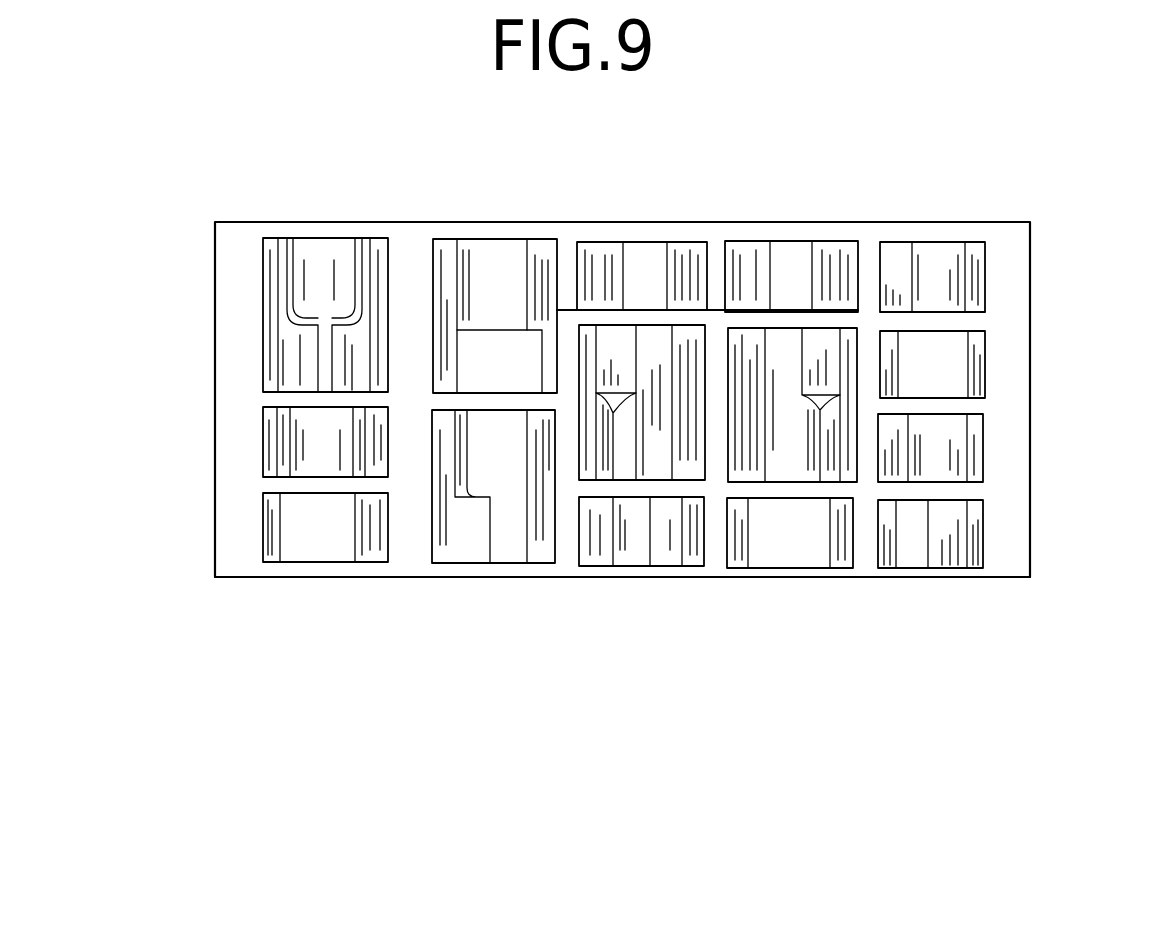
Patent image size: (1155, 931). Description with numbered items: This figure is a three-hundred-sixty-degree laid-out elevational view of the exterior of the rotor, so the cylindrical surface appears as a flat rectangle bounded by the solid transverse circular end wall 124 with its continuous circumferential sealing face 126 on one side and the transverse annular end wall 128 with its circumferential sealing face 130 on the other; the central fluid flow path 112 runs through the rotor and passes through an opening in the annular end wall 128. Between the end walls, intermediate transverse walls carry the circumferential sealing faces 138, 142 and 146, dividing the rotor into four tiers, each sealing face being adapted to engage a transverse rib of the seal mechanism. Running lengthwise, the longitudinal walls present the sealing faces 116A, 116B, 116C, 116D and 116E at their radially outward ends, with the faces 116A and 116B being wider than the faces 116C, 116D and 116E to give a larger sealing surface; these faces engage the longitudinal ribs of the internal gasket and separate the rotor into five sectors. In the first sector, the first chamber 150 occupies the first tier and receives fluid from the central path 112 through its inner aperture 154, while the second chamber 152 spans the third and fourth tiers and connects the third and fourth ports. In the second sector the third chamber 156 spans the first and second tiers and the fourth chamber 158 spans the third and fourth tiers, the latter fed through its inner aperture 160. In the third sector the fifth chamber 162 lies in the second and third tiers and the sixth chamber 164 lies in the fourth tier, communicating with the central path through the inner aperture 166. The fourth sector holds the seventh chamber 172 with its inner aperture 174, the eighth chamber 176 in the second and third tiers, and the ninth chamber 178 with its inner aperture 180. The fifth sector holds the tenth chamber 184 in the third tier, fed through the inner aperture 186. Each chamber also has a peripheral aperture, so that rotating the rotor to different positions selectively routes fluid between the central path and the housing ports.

The central fluid flow path 112 is at (327, 545).
The longitudinally extending sealing face 116A is at (242, 402).
The longitudinally extending sealing face 116B is at (410, 540).
The longitudinally extending sealing face 116C is at (567, 540).
The longitudinally extending sealing face 116D is at (718, 540).
The longitudinally extending sealing face 116E is at (865, 545).
The solid transverse circular end wall 124 is at (918, 572).
The circumferential sealing face 126 is at (968, 572).
The transverse annular end wall 128 is at (955, 237).
The circumferential sealing face 130 is at (918, 232).
The circumferential sealing face 138 is at (972, 490).
The circumferential sealing face 142 is at (972, 405).
The circumferential sealing face 146 is at (972, 321).
The first chamber 150 is at (294, 562).
The second chamber 152 is at (295, 363).
The inner aperture 154 is at (358, 519).
The third chamber 156 is at (510, 540).
The fourth chamber 158 is at (496, 256).
The inner aperture 160 is at (455, 352).
The fifth chamber 162 is at (603, 350).
The sixth chamber 164 is at (695, 245).
The inner aperture 166 is at (627, 270).
The seventh chamber 172 is at (790, 568).
The inner aperture 174 is at (748, 527).
The eighth chamber 176 is at (750, 345).
The ninth chamber 178 is at (822, 258).
The inner aperture 180 is at (775, 258).
The tenth chamber 184 is at (972, 343).
The inner aperture 186 is at (898, 360).